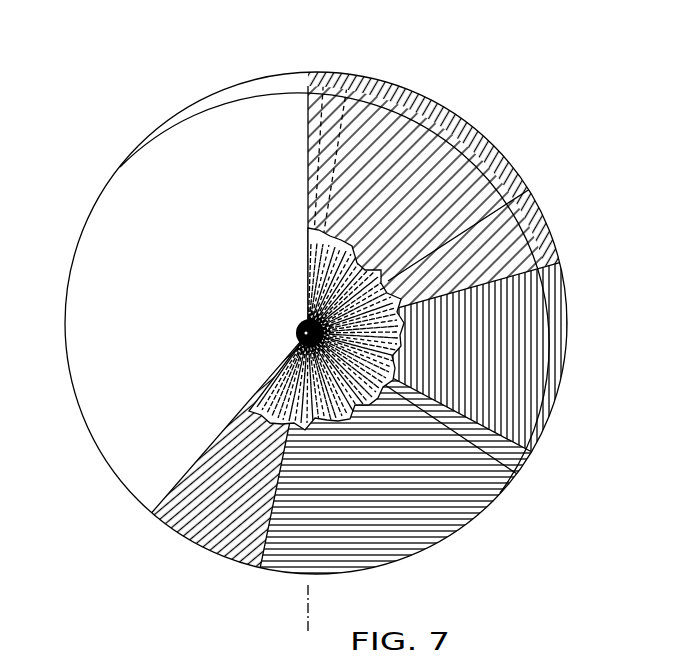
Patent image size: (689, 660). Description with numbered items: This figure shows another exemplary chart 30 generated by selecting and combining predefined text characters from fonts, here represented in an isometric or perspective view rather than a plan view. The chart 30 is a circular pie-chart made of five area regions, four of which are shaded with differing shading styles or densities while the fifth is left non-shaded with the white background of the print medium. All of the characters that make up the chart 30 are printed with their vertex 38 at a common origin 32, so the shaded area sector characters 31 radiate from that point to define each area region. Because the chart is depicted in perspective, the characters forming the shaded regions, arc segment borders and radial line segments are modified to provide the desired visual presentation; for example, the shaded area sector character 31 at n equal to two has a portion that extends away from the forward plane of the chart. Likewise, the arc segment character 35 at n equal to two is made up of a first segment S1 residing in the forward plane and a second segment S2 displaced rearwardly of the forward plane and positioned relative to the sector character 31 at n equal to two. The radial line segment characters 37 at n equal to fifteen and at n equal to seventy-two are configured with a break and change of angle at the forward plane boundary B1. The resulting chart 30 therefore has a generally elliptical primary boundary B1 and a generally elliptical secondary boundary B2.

The chart 30 is at (319, 323).
The shaded area sector character 31 is at (338, 106).
The common origin 32 is at (307, 420).
The arc segment character 35 is at (393, 172).
The radial line segment character 37 is at (572, 497).
The vertex 38 is at (303, 333).
The primary boundary B1 is at (72, 277).
The secondary boundary B2 is at (507, 147).
The first segment S1 is at (345, 72).
The second segment S2 is at (343, 90).